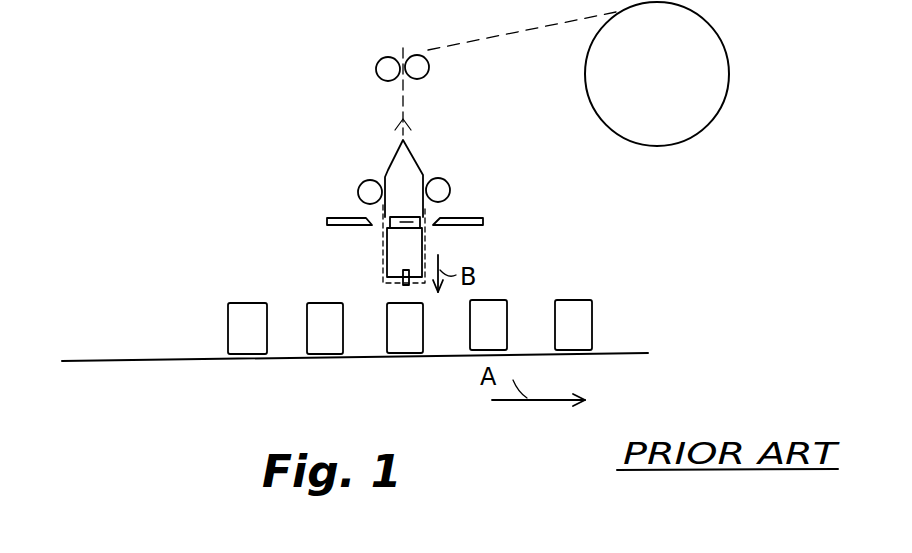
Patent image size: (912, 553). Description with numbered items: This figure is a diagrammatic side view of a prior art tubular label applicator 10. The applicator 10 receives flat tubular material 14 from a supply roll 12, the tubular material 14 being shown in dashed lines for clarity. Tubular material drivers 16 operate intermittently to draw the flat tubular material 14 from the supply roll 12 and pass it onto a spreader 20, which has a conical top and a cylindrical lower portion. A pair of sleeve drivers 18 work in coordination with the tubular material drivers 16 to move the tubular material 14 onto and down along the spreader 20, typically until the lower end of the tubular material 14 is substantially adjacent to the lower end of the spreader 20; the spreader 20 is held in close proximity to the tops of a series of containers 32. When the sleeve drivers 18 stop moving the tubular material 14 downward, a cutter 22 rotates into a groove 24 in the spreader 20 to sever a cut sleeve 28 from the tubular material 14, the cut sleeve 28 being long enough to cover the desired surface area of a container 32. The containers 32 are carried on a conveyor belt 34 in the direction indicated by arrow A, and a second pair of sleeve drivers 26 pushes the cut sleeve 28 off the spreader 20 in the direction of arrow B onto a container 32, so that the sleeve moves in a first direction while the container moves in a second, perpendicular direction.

The tubular label applicator 10 is at (303, 110).
The supply roll 12 is at (684, 135).
The flat tubular material 14 is at (499, 42).
The tubular material drivers 16 is at (392, 80).
The sleeve drivers 18 is at (373, 180).
The spreader 20 is at (410, 172).
The cutter 22 is at (346, 218).
The groove 24 is at (423, 220).
The sleeve drivers 26 is at (388, 273).
The cut sleeve 28 is at (425, 250).
The containers 32 is at (583, 289).
The conveyor belt 34 is at (648, 353).